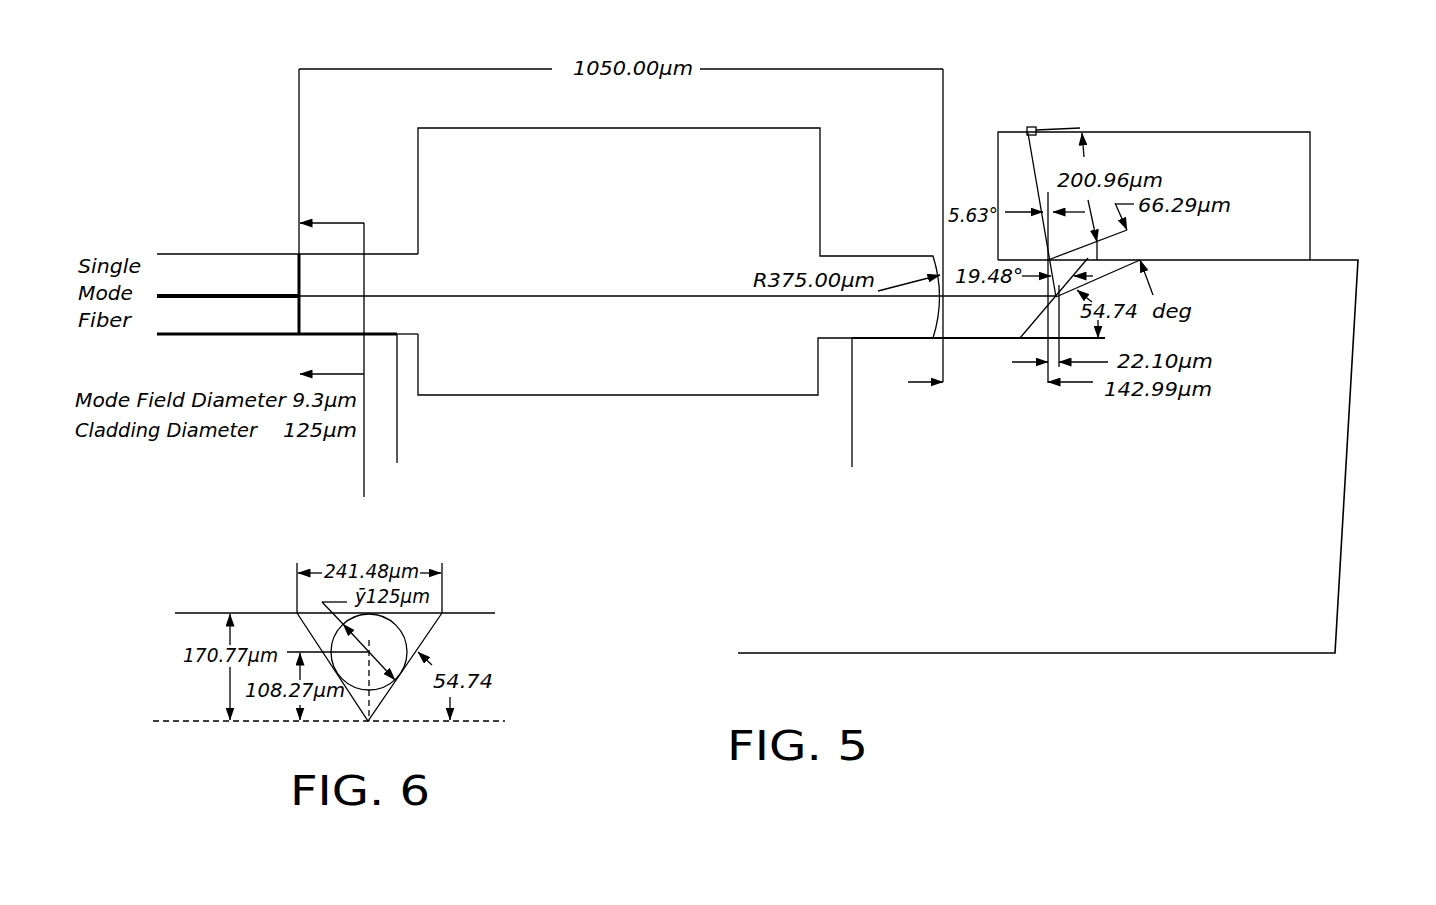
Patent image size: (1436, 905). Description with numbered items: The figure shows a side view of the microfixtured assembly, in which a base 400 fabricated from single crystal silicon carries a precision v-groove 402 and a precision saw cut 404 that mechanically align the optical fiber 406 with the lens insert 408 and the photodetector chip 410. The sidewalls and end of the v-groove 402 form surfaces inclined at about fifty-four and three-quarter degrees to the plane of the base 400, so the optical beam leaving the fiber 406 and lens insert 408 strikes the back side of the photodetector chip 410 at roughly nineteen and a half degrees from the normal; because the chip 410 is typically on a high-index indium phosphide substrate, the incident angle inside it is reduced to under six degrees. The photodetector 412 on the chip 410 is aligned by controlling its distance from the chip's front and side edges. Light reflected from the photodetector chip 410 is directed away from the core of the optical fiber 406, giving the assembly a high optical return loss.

In FIG. 5, the base 400 is at (1060, 636).
In FIG. 6, the base 400 is at (468, 647).
In FIG. 6, the v-groove 402 is at (357, 695).
In FIG. 5, the saw cut 404 is at (745, 440).
In FIG. 5, the optical fiber 406 is at (225, 263).
In FIG. 6, the optical fiber 406 is at (398, 640).
In FIG. 5, the lens insert 408 is at (752, 138).
In FIG. 5, the photodetector chip 410 is at (1307, 160).
In FIG. 5, the photodetector 412 is at (1068, 128).